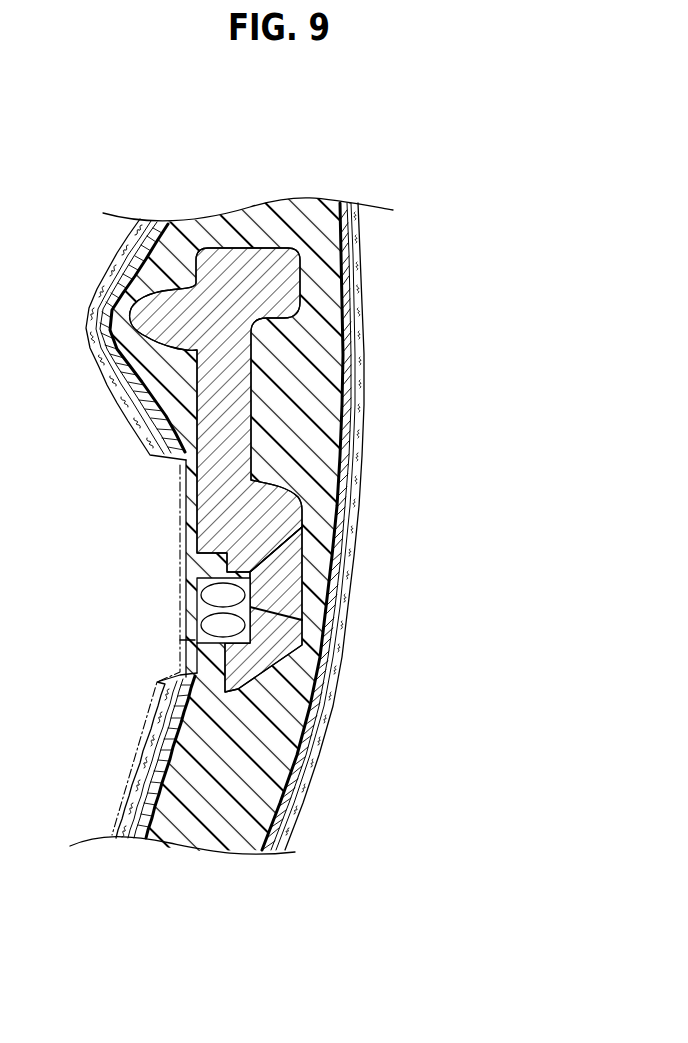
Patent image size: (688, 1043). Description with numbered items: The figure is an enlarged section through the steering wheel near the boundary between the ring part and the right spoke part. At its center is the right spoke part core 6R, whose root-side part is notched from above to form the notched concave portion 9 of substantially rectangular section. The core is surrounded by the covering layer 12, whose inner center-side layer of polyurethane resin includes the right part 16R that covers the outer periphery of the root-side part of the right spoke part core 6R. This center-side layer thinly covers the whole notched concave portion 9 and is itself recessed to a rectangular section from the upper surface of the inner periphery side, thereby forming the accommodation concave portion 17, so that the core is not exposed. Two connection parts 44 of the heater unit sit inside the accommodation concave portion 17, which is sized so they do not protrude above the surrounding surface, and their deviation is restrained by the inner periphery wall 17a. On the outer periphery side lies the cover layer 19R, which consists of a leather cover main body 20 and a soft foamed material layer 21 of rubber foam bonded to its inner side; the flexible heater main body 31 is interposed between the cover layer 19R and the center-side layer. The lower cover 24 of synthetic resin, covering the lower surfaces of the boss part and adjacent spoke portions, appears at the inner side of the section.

The right spoke part core 6R is at (252, 258).
The cover layer 19R is at (399, 493).
The cover main body 20 is at (342, 514).
The soft foamed material layer 21 is at (360, 308).
The heater main body 31 is at (344, 366).
The right part 16R is at (315, 443).
The covering layer 12 is at (384, 527).
The lower cover 24 is at (157, 463).
The connection part 44 is at (210, 622).
The accommodation concave portion 17 is at (244, 609).
The inner periphery wall 17a is at (215, 630).
The notched concave portion 9 is at (272, 610).